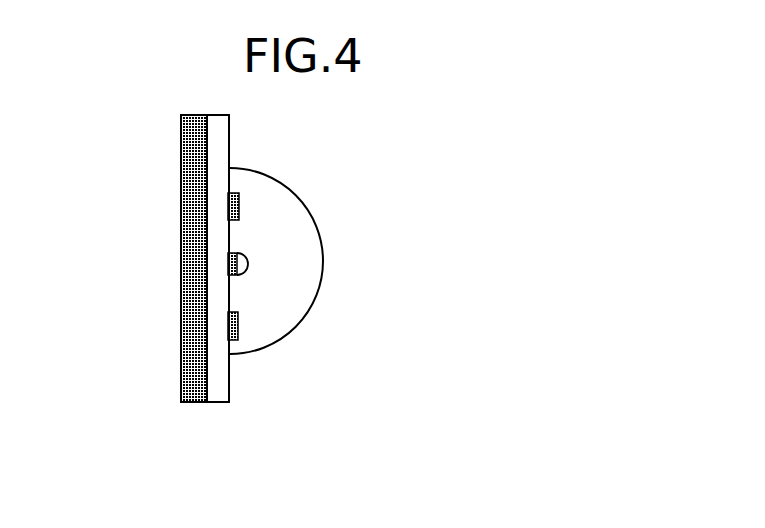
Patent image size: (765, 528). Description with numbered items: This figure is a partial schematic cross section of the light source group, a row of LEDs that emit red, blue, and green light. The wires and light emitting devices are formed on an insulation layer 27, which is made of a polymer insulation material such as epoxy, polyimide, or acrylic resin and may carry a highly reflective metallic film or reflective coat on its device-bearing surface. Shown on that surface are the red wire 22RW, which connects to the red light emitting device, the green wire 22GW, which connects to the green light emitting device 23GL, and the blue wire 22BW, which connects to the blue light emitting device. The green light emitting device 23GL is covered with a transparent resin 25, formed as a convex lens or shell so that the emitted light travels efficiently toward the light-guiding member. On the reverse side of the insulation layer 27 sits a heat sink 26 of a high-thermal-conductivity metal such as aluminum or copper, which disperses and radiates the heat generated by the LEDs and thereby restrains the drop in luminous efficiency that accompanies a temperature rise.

The red wire 22RW is at (239, 202).
The green wire 22GW is at (247, 268).
The blue wire 22BW is at (238, 326).
The green light emitting device 23GL is at (247, 258).
The transparent resin 25 is at (307, 307).
The heat sink 26 is at (180, 372).
The insulation layer 27 is at (229, 401).